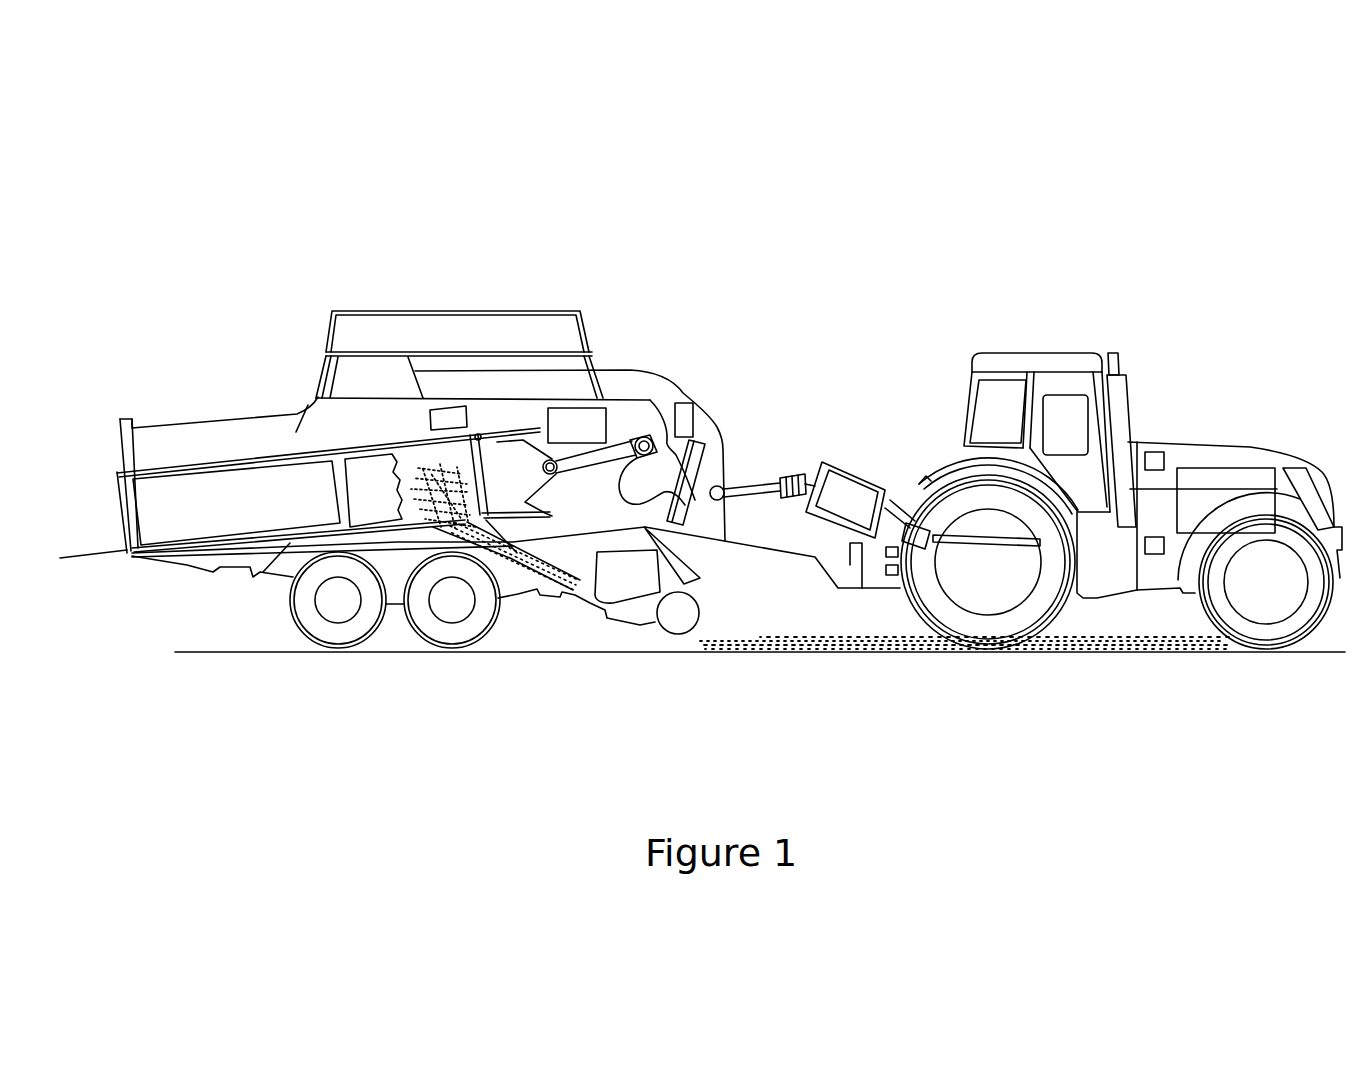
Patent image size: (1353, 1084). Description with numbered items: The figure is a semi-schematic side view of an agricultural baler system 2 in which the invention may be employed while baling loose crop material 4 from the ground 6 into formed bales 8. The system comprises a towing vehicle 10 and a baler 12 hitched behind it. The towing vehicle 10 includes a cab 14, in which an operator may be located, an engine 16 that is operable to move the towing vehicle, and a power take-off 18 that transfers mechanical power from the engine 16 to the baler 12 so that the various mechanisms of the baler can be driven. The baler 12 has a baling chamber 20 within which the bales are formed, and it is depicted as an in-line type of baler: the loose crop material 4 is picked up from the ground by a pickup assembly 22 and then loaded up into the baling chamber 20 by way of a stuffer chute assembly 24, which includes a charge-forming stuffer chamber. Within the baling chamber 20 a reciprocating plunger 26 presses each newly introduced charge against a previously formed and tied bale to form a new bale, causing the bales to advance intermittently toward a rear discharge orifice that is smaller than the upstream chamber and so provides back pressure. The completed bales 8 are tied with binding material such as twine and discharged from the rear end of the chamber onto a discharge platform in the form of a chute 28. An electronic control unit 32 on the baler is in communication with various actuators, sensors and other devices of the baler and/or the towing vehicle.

The agricultural baler system 2 is at (724, 232).
The loose crop material 4 is at (770, 636).
The ground 6 is at (570, 653).
The formed bales 8 is at (240, 513).
The towing vehicle 10 is at (1162, 392).
The baler 12 is at (505, 290).
The cab 14 is at (1027, 353).
The engine 16 is at (1250, 479).
The power take-off (PTO) 18 is at (993, 544).
The baling chamber 20 is at (378, 447).
The pickup assembly 22 is at (633, 606).
The stuffer chute assembly 24 is at (523, 577).
The reciprocating plunger 26 is at (531, 467).
The chute 28 is at (95, 560).
The electronic control unit 32 is at (590, 423).